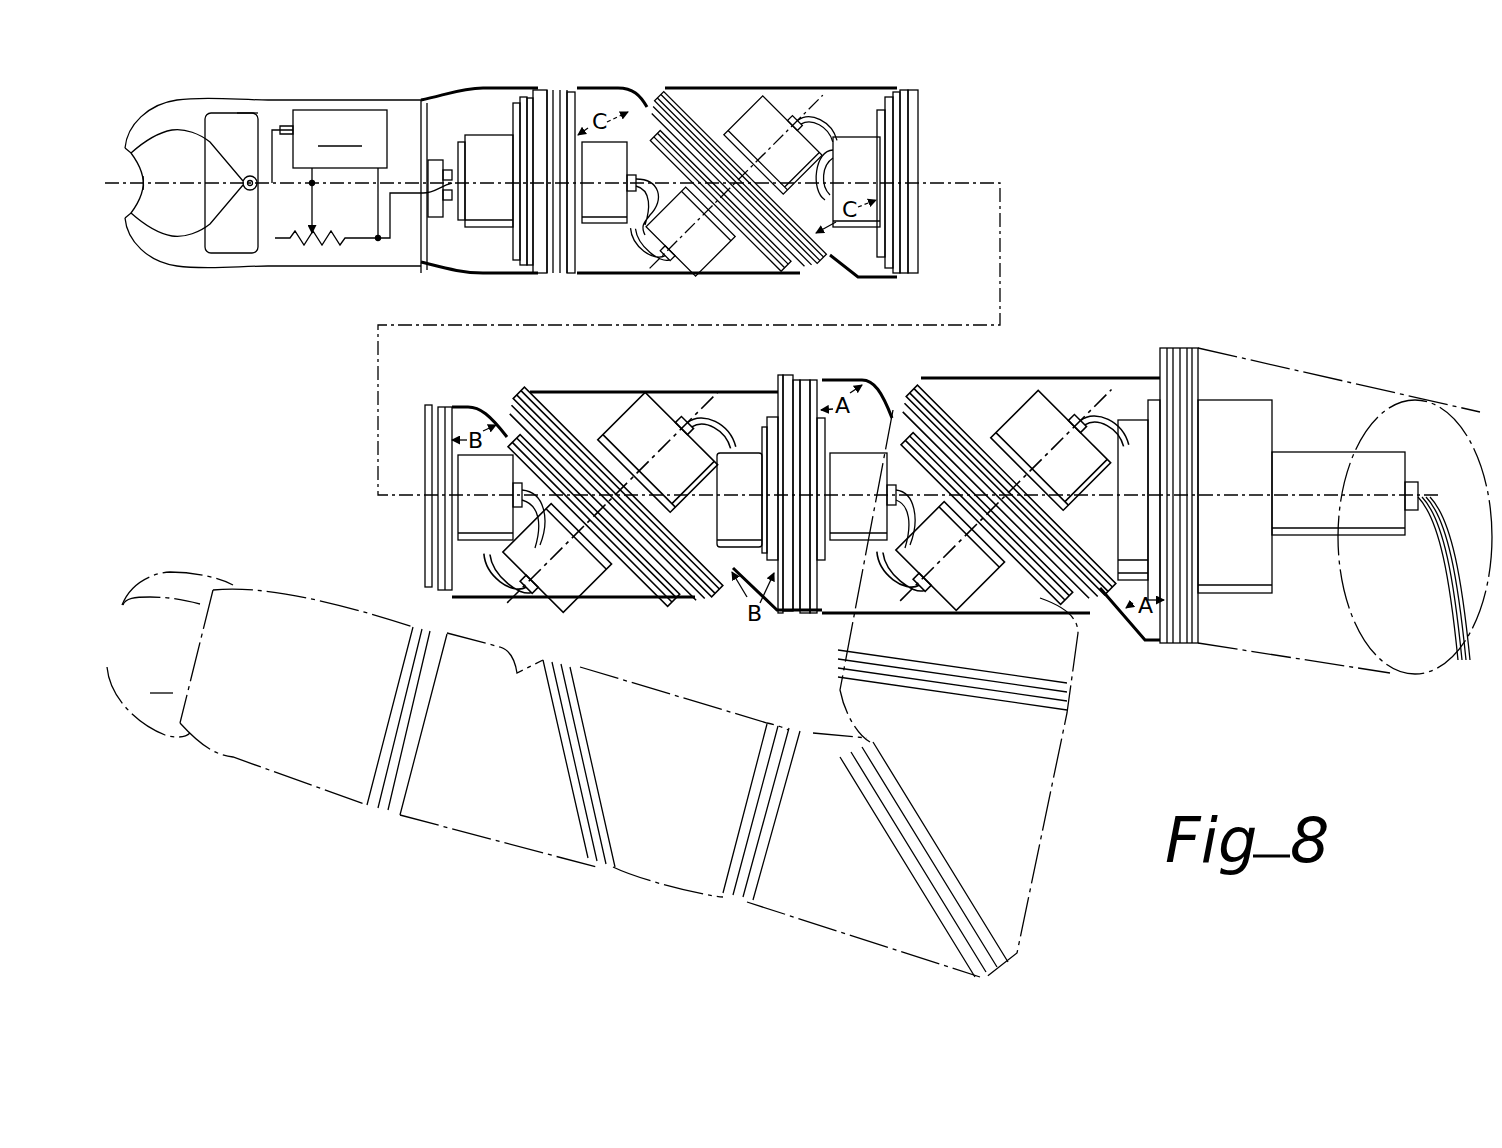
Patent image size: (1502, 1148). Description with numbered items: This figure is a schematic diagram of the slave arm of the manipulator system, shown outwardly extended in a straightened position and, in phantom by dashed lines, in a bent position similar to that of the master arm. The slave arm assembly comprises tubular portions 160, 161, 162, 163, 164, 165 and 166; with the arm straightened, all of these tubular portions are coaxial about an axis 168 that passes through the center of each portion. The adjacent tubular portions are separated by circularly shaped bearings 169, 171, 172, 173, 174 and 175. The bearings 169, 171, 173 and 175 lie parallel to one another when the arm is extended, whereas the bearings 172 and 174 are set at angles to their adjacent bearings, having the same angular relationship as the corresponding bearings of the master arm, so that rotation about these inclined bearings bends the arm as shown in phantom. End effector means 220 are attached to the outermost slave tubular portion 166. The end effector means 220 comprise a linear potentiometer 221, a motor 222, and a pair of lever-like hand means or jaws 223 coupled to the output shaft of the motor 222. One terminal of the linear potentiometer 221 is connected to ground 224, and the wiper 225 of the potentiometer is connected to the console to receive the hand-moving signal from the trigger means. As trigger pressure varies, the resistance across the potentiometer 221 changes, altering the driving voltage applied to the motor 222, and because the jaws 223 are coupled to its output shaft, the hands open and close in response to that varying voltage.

The tubular portion 160 is at (1093, 392).
The tubular portion 161 is at (988, 603).
The tubular portion 162 is at (707, 407).
The tubular portion 163 is at (488, 590).
The tubular portion 164 is at (857, 97).
The tubular portion 165 is at (627, 267).
The outermost slave tubular portion 166 is at (487, 107).
The axis 168 is at (963, 188).
The bearing 169 is at (1180, 350).
The bearing 171 is at (790, 392).
The bearing 172 is at (510, 404).
The bearing 173 is at (905, 118).
The bearing 174 is at (657, 103).
The bearing 175 is at (555, 273).
The end effector means 220 is at (280, 181).
The linear potentiometer 221 is at (350, 243).
The motor 222 is at (329, 146).
The hand means or jaws 223 is at (196, 183).
The ground 224 is at (390, 242).
The wiper 225 is at (314, 198).